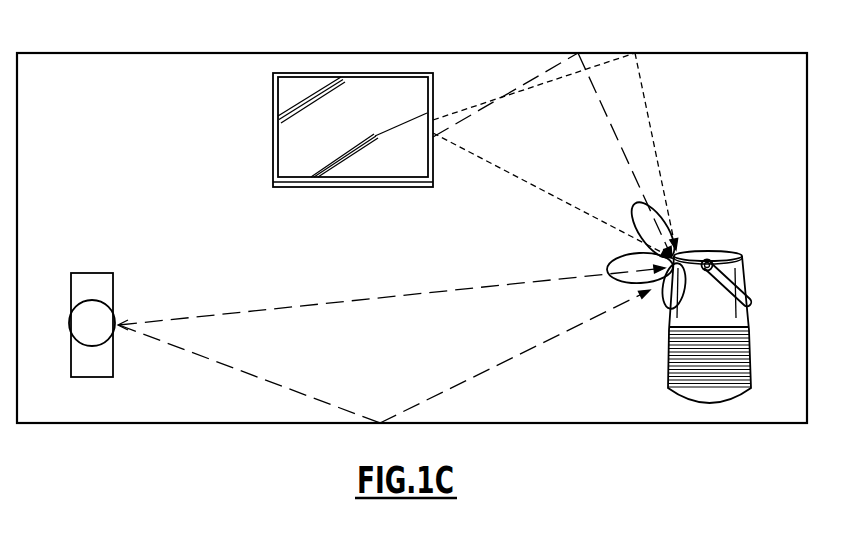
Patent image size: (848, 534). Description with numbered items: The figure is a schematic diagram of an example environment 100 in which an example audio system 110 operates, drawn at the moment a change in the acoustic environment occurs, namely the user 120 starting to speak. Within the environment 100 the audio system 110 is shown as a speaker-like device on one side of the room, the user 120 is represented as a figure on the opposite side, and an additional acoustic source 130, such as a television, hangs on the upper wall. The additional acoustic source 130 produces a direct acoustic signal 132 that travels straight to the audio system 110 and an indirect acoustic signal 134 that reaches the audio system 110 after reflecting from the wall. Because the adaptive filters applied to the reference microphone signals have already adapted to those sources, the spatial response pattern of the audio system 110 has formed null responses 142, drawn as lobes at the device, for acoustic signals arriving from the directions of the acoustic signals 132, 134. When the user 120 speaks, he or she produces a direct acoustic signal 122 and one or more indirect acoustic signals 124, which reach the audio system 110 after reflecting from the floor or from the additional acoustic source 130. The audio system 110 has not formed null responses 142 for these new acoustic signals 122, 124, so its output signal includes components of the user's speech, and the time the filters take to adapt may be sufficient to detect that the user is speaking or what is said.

The environment 100 is at (701, 53).
The audio system 110 is at (719, 253).
The user 120 is at (92, 273).
The direct acoustic signal 122 is at (391, 297).
The indirect acoustic signal 124 is at (605, 112).
The additional acoustic source 130 is at (273, 133).
The direct acoustic signal 132 is at (535, 187).
The indirect acoustic signal 134 is at (647, 108).
The null responses 142 is at (608, 245).